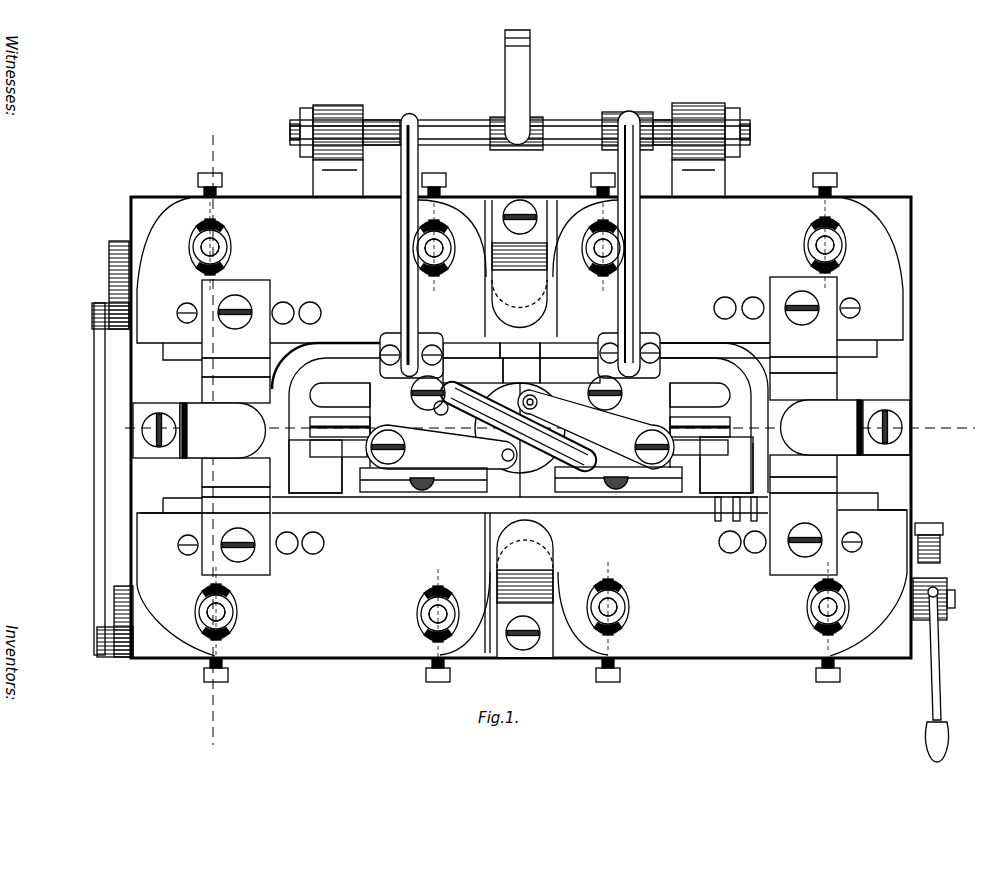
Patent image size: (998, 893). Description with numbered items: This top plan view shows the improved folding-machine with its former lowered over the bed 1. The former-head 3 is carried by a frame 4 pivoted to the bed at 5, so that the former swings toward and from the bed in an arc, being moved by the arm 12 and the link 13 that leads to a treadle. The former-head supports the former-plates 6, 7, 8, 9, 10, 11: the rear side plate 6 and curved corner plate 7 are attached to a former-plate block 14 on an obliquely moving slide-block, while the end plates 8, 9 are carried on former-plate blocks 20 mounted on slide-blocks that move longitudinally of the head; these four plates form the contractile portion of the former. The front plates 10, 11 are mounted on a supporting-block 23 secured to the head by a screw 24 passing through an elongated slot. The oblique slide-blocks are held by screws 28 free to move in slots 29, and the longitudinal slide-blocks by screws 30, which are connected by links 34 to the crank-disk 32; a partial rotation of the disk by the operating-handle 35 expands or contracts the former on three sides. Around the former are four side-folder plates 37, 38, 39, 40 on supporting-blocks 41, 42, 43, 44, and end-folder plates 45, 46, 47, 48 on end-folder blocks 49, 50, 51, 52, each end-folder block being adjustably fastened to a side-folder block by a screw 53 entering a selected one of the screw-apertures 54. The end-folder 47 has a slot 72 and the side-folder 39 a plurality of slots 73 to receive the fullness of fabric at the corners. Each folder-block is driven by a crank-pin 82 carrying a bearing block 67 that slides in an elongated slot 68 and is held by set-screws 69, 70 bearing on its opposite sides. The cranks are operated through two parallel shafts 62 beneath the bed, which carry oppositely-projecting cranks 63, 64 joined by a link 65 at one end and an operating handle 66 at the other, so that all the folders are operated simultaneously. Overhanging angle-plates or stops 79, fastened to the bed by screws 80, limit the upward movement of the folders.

The bed 1 is at (257, 197).
The former-head 3 is at (573, 393).
The frame 4 is at (401, 250).
The pivot 5 is at (384, 120).
The rear side former-plate 6 is at (387, 418).
The curved corner-former plate 7 is at (545, 418).
The end former-plate 8 is at (272, 437).
The end former-plate 9 is at (726, 465).
The front former-plate 10 is at (462, 490).
The front former-plate 11 is at (597, 482).
The arm 12 is at (512, 53).
The link 13 is at (520, 423).
The former-plate block 14 is at (520, 425).
The former-plate block 20 is at (519, 449).
The supporting-block 23 is at (400, 476).
The screw 24 is at (425, 486).
The screw 28 is at (420, 391).
The slot 29 is at (437, 411).
The screw 30 is at (388, 437).
The crank-disk 32 is at (518, 426).
The link 34 is at (597, 418).
The operating-handle 35 is at (600, 455).
The side-folder plate 37 is at (458, 348).
The side-folder plate 38 is at (690, 345).
The side-folder plate 39 is at (622, 503).
The side-folder plate 40 is at (357, 502).
The side-folder supporting-block 41 is at (325, 319).
The side-folder supporting-block 42 is at (715, 301).
The side-folder supporting-block 43 is at (777, 534).
The side-folder supporting-block 44 is at (250, 553).
The end-folder plate 45 is at (278, 378).
The end-folder plate 46 is at (765, 391).
The end-folder plate 47 is at (275, 471).
The end-folder plate 48 is at (762, 465).
The end-folder block 49 is at (236, 320).
The end-folder block 50 is at (803, 317).
The end-folder block 51 is at (236, 539).
The end-folder block 52 is at (803, 533).
The screw 53 is at (242, 305).
The screw-aperture 54 is at (309, 305).
The parallel shaft 62 is at (950, 601).
The crank 63 is at (109, 280).
The crank 64 is at (120, 658).
The link 65 is at (94, 444).
The operating arm or handle 66 is at (937, 680).
The bearing block or sleeve 67 is at (226, 238).
The elongated slot 68 is at (226, 268).
The set-screw 69 is at (198, 190).
The set-screw 70 is at (200, 280).
The slot 72 is at (236, 509).
The slot 73 is at (752, 519).
The angle-plate or stop 79 is at (500, 300).
The screw 80 is at (520, 210).
The crank-pin 82 is at (214, 247).